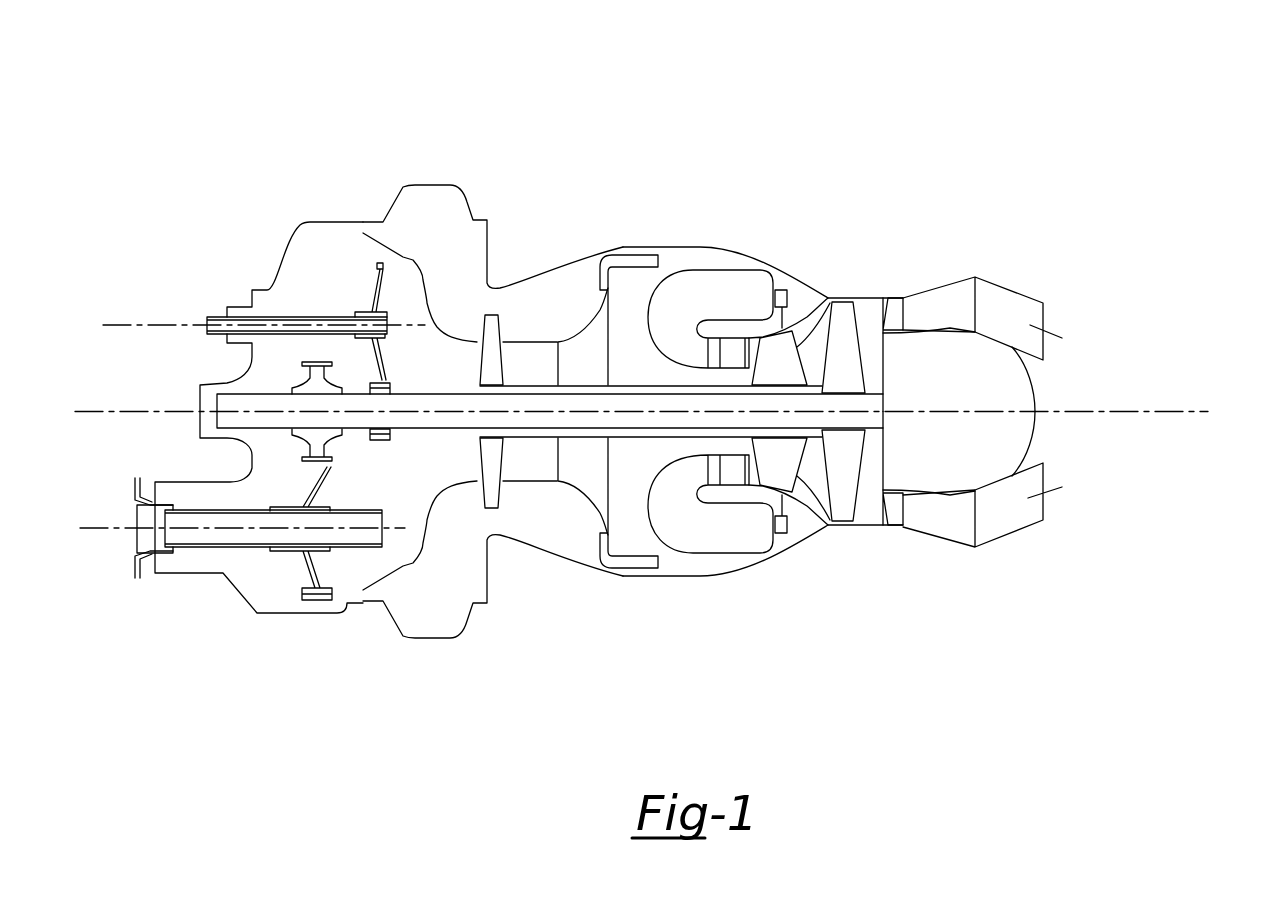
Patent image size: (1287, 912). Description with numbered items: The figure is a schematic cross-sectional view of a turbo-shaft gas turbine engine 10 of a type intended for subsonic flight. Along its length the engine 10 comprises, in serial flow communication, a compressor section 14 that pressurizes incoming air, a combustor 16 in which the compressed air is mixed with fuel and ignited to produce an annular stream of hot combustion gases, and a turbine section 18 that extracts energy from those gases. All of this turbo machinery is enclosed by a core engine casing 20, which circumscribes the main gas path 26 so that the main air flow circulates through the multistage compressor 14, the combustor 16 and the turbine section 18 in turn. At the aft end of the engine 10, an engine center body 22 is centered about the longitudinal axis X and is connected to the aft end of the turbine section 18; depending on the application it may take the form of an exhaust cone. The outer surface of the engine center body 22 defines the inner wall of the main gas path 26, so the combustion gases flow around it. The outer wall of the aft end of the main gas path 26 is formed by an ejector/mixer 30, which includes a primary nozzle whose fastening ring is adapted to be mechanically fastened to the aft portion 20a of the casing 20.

The turbo-shaft gas turbine engine 10 is at (694, 200).
The compressor section 14 is at (512, 285).
The combustor 16 is at (746, 268).
The turbine section 18 is at (843, 298).
The core engine casing 20 is at (733, 576).
The aft portion of the casing 20a is at (951, 275).
The engine center body 22 is at (1036, 388).
The main gas path 26 is at (1015, 312).
The ejector/mixer 30 is at (1012, 535).
The longitudinal axis X is at (1183, 412).